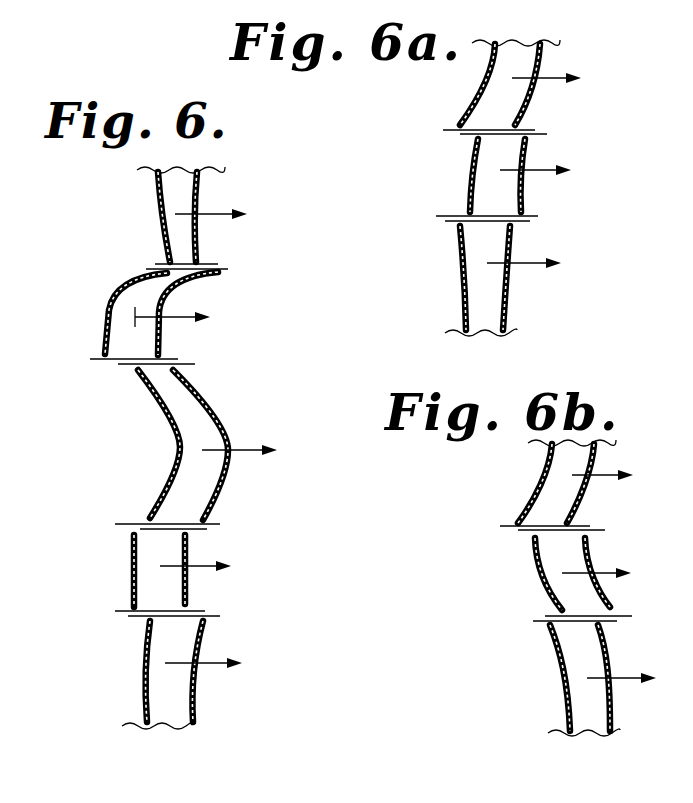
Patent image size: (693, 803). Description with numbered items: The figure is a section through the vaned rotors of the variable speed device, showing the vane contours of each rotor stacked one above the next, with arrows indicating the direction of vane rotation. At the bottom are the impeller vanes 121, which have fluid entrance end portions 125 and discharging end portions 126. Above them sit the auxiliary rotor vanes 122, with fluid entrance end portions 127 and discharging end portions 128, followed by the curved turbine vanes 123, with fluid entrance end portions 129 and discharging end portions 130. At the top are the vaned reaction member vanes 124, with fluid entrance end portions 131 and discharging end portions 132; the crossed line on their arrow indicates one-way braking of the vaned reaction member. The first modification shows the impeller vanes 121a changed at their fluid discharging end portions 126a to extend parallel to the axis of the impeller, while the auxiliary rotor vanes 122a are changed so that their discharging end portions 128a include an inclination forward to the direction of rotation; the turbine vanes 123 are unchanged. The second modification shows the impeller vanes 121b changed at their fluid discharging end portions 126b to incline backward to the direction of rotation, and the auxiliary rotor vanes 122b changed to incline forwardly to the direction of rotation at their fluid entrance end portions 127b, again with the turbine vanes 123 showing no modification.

In FIG. 6, the impeller vanes 121 is at (177, 217).
In FIG. 6A, the impeller vanes 121a is at (485, 277).
In FIG. 6B, the impeller vanes 121b is at (567, 678).
In FIG. 6, the auxiliary rotor vanes 122 is at (162, 568).
In FIG. 6A, the auxiliary rotor vanes 122a is at (498, 174).
In FIG. 6B, the auxiliary rotor vanes 122b is at (573, 570).
In FIG. 6, the turbine vanes 123 is at (186, 445).
In FIG. 6A, the turbine vanes 123 is at (449, 96).
In FIG. 6B, the turbine vanes 123 is at (512, 491).
In FIG. 6, the vaned reaction member vanes 124 is at (157, 313).
In FIG. 6, the fluid entrance end portions 125 is at (200, 252).
In FIG. 6, the discharging end portions 126 is at (205, 625).
In FIG. 6A, the fluid discharging end portions 126a is at (512, 228).
In FIG. 6B, the fluid discharging end portions 126b is at (547, 627).
In FIG. 6, the fluid entrance end portions 127 is at (188, 598).
In FIG. 6A, the fluid entrance end portions 127 is at (524, 205).
In FIG. 6B, the fluid entrance end portions 127b is at (612, 605).
In FIG. 6, the discharging end portions 128 is at (188, 537).
In FIG. 6B, the discharging end portions 128 is at (588, 541).
In FIG. 6A, the discharging end portions 128a is at (527, 141).
In FIG. 6, the fluid entrance end portions 129 is at (150, 516).
In FIG. 6, the discharging end portions 130 is at (138, 372).
In FIG. 6, the fluid entrance end portions 131 is at (160, 354).
In FIG. 6, the discharging end portions 132 is at (219, 276).